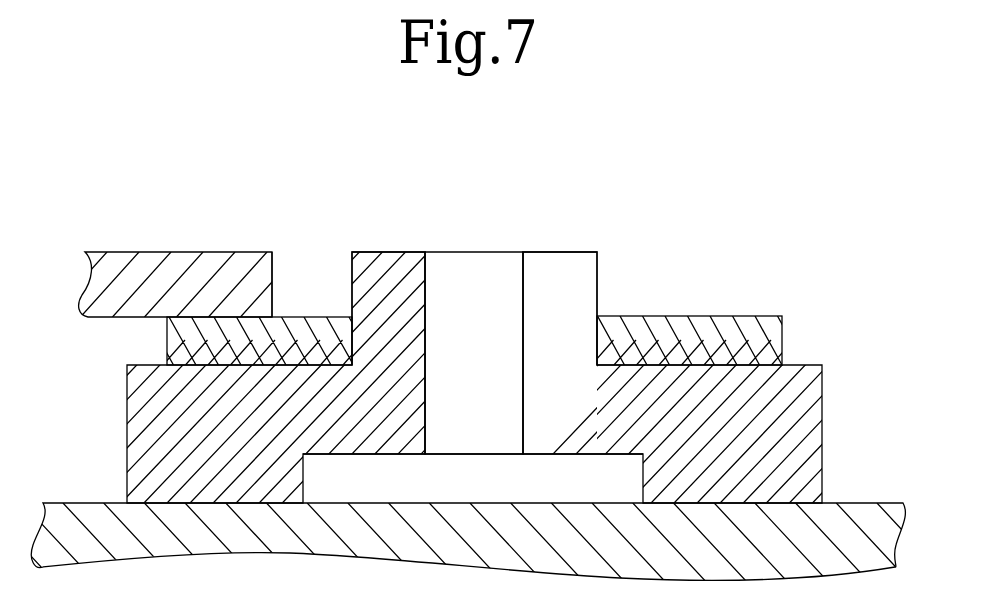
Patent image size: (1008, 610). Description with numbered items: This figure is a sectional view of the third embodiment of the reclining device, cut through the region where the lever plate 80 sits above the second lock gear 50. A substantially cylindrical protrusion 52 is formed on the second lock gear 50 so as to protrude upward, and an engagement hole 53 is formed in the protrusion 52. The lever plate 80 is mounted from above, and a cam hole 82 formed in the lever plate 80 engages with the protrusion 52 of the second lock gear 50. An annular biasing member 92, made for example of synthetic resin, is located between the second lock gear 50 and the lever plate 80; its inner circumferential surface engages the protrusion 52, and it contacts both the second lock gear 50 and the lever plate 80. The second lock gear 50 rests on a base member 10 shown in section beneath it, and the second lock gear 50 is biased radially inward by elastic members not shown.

The substrate 10 is at (92, 512).
The second lock gear 50 is at (797, 365).
The protrusion 52 is at (563, 252).
The engagement hole 53 is at (428, 272).
The lever plate 80 is at (162, 252).
The cam hole 82 is at (272, 260).
The biasing member 92 is at (307, 317).